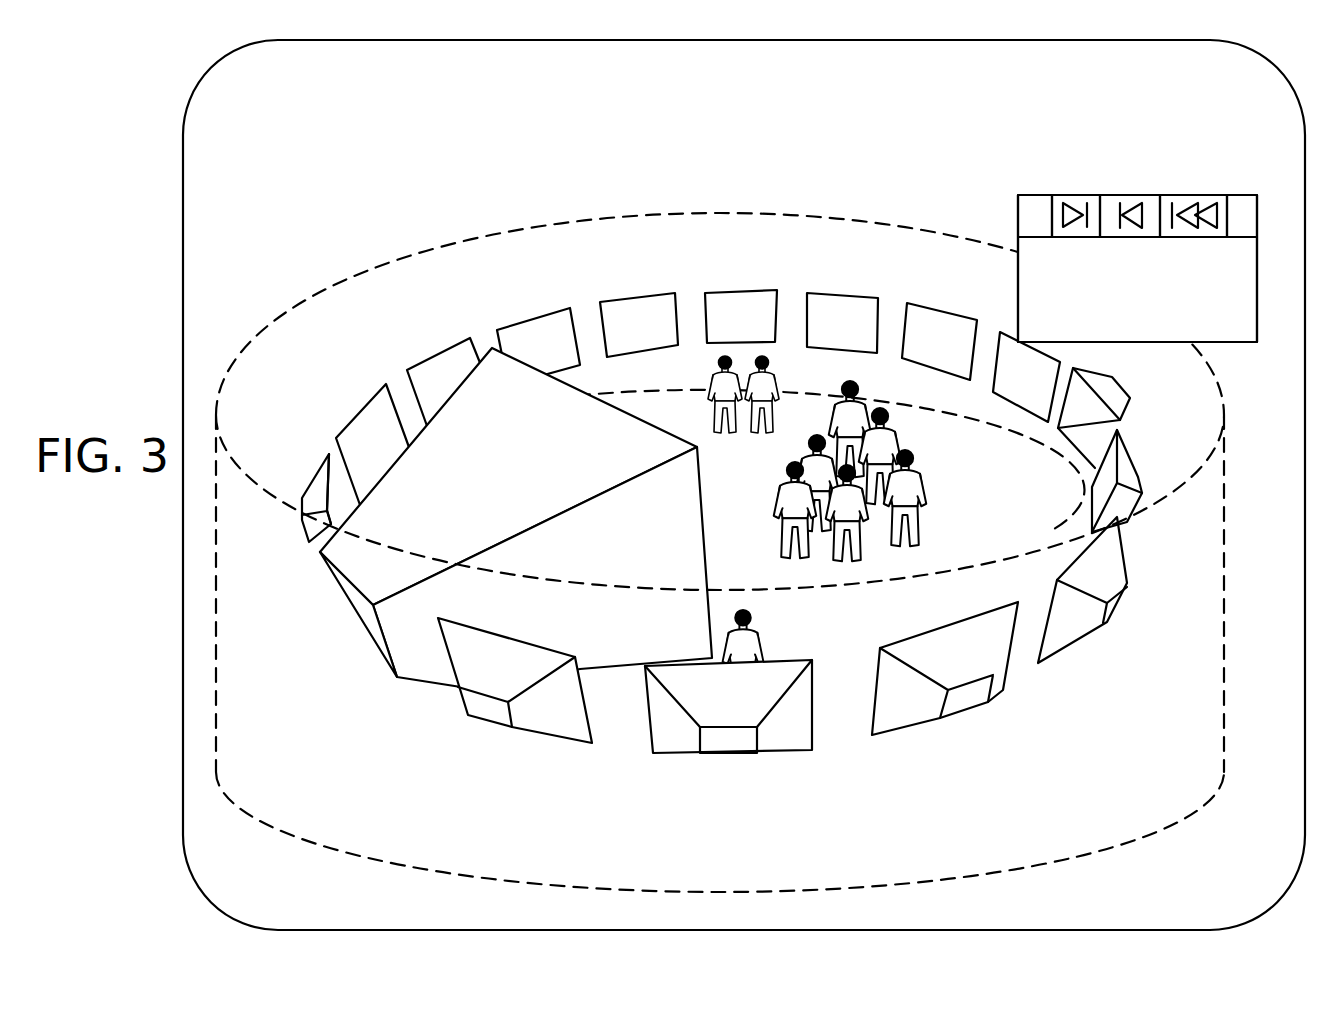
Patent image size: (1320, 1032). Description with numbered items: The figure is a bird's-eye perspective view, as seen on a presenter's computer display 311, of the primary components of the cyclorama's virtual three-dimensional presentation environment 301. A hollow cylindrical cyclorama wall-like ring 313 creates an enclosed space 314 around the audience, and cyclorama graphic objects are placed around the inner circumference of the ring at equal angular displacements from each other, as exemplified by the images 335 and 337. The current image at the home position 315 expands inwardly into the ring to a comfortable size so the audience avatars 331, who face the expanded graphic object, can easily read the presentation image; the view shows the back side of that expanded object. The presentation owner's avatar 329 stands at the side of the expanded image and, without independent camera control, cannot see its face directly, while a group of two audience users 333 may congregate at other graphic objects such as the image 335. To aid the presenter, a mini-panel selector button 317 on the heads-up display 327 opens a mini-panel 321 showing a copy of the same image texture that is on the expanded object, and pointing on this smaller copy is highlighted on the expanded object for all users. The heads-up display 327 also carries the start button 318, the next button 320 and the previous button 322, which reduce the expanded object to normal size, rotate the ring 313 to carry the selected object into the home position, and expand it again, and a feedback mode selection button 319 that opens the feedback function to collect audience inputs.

The cyclorama virtual 3D presentation environment 301 is at (144, 129).
The computer display 311 is at (181, 341).
The hollow cylindrical cyclorama wall-like ring 313 is at (352, 273).
The enclosed space 314 is at (467, 252).
The expanded cyclorama graphic object at home position 315 is at (517, 474).
The mini-panel selector button 317 is at (1022, 197).
The start button 318 is at (1193, 207).
The feedback mode selection button 319 is at (1242, 192).
The next button 320 is at (1075, 207).
The mini-panel 321 is at (1212, 313).
The previous button 322 is at (1130, 205).
The heads-up display 327 is at (1143, 235).
The presentation owner's avatar 329 is at (755, 643).
The group of participants 331 is at (953, 480).
The group of two audience users 333 is at (753, 334).
The cyclorama graphic object image 335 is at (737, 303).
The cyclorama graphic object image 337 is at (843, 322).